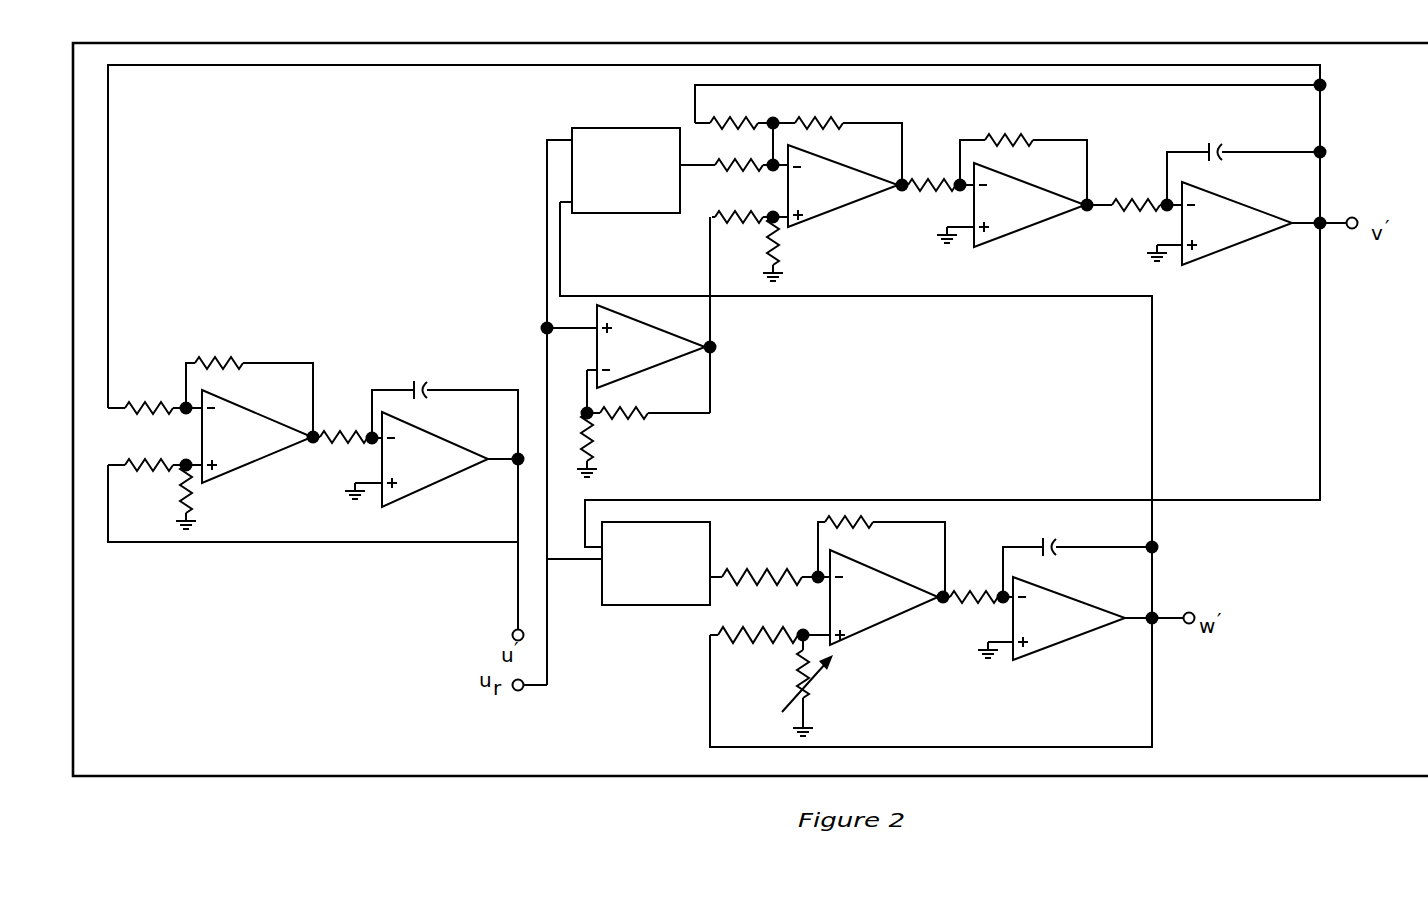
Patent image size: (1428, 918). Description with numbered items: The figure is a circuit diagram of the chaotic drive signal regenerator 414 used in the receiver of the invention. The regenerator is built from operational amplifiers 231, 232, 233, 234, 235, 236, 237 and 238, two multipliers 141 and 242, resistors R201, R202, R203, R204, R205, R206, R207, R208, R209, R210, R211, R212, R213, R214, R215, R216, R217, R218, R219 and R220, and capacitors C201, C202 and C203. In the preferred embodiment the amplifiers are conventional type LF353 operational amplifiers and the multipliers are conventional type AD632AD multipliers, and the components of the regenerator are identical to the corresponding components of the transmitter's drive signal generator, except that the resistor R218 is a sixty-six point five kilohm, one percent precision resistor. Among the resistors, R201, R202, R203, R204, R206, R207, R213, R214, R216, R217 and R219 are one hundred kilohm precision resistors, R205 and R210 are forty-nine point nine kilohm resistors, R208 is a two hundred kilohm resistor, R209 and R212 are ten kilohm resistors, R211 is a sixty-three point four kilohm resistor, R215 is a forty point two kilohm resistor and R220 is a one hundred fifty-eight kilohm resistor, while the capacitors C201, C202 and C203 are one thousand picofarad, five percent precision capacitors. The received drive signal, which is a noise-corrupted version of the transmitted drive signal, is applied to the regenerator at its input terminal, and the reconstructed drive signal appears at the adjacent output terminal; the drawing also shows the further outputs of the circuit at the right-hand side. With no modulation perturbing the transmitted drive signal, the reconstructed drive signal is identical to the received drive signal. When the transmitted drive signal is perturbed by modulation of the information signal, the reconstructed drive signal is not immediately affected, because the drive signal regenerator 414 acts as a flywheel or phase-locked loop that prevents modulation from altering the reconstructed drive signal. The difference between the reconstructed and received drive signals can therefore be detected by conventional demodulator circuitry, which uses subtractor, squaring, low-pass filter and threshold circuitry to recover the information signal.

The drive signal regenerator 414 is at (1168, 785).
The multiplier 141 is at (626, 170).
The multiplier 242 is at (656, 563).
The operational amplifier 231 is at (250, 436).
The operational amplifier 232 is at (435, 459).
The operational amplifier 233 is at (657, 346).
The operational amplifier 234 is at (838, 172).
The operational amplifier 235 is at (1015, 205).
The operational amplifier 236 is at (1252, 223).
The operational amplifier 237 is at (890, 597).
The operational amplifier 238 is at (1086, 618).
The resistor R201 is at (147, 419).
The resistor R202 is at (147, 454).
The resistor R203 is at (220, 497).
The resistor R204 is at (249, 383).
The resistor R205 is at (342, 447).
The resistor R206 is at (614, 442).
The resistor R207 is at (648, 401).
The resistor R208 is at (734, 111).
The resistor R209 is at (734, 152).
The resistor R210 is at (742, 204).
The resistor R211 is at (802, 249).
The resistor R212 is at (837, 151).
The resistor R213 is at (938, 201).
The resistor R214 is at (1023, 157).
The resistor R215 is at (1134, 219).
The resistor R216 is at (770, 564).
The resistor R217 is at (770, 651).
The resistor R218 is at (833, 685).
The resistor R219 is at (881, 556).
The resistor R220 is at (978, 612).
The capacitor C201 is at (445, 410).
The capacitor C202 is at (1247, 174).
The capacitor C203 is at (1081, 567).